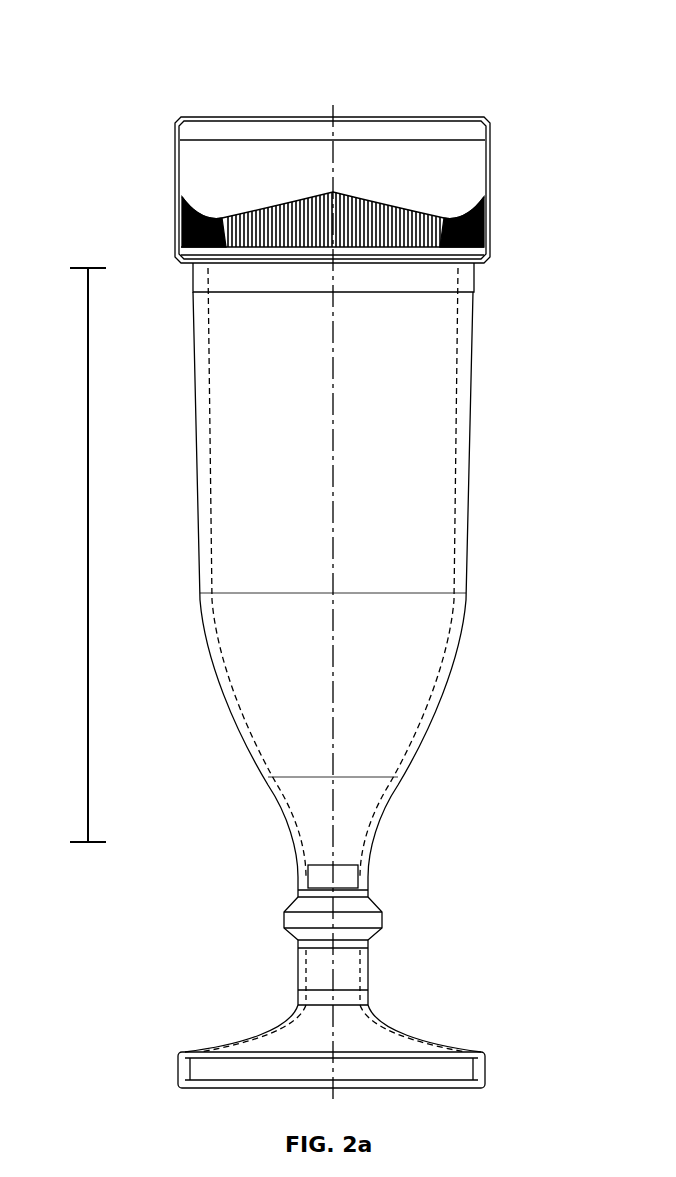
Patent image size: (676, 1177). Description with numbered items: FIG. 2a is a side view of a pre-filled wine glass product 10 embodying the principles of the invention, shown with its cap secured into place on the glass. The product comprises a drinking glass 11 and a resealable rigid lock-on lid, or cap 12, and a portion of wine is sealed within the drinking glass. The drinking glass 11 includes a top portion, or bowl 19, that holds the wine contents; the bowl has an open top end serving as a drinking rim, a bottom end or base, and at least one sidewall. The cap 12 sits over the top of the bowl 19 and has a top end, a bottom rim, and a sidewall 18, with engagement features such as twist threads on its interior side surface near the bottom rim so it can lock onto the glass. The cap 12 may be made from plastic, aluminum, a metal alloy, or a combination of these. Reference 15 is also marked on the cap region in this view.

The pre-filled wine glass product 10 is at (215, 92).
The drinking glass 11 is at (213, 367).
The cap 12 is at (490, 233).
The cap seal liner 15 is at (177, 233).
The sidewall 18 is at (373, 213).
The bowl 19 is at (71, 555).